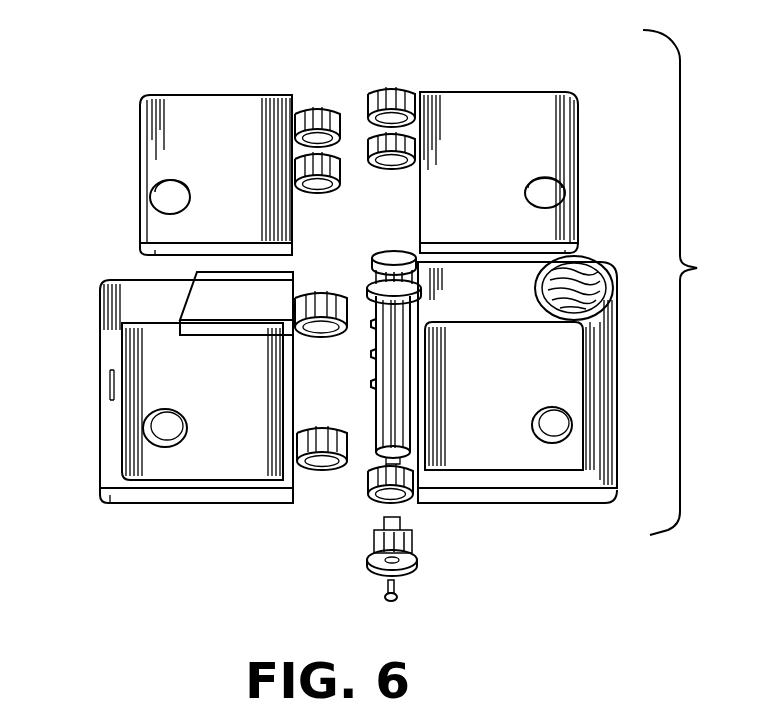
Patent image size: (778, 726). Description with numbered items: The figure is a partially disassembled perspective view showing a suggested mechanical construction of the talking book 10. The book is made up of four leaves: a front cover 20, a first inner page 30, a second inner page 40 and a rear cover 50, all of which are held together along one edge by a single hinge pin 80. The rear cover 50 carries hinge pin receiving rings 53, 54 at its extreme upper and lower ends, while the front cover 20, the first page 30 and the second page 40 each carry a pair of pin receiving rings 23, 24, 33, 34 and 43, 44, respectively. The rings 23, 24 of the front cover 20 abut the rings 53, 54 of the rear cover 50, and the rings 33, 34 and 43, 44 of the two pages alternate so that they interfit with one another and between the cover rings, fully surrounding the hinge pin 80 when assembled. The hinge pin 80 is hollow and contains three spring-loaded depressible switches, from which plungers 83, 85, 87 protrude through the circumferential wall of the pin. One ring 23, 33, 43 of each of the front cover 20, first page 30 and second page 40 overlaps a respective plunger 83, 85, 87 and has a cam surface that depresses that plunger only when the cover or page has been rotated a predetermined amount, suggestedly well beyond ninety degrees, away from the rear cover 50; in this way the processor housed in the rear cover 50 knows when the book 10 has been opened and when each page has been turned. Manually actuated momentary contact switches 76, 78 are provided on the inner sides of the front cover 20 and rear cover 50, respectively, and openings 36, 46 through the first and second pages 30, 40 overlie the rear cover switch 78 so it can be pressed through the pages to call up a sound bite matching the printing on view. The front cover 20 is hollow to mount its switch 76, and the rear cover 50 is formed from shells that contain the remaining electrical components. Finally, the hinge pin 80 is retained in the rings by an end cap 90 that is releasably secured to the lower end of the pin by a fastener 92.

The talking book 10 is at (735, 284).
The front cover 20 is at (187, 389).
The pin receiving ring 23 is at (320, 307).
The pin receiving ring 24 is at (320, 470).
The first inner page 30 is at (206, 145).
The pin receiving ring 33 is at (315, 108).
The pin receiving ring 34 is at (318, 192).
The opening 36 is at (172, 188).
The second inner page 40 is at (507, 142).
The pin receiving ring 43 is at (390, 88).
The pin receiving ring 44 is at (391, 165).
The opening 46 is at (540, 180).
The rear cover 50 is at (519, 365).
The hinge pin receiving ring 53 is at (363, 339).
The hinge pin receiving ring 54 is at (395, 478).
The momentary contact switch 76 is at (160, 428).
The momentary contact switch 78 is at (552, 425).
The hinge pin 80 is at (390, 251).
The plunger 83 is at (370, 325).
The plunger 85 is at (370, 355).
The plunger 87 is at (370, 385).
The end cap 90 is at (414, 538).
The fastener 92 is at (399, 590).